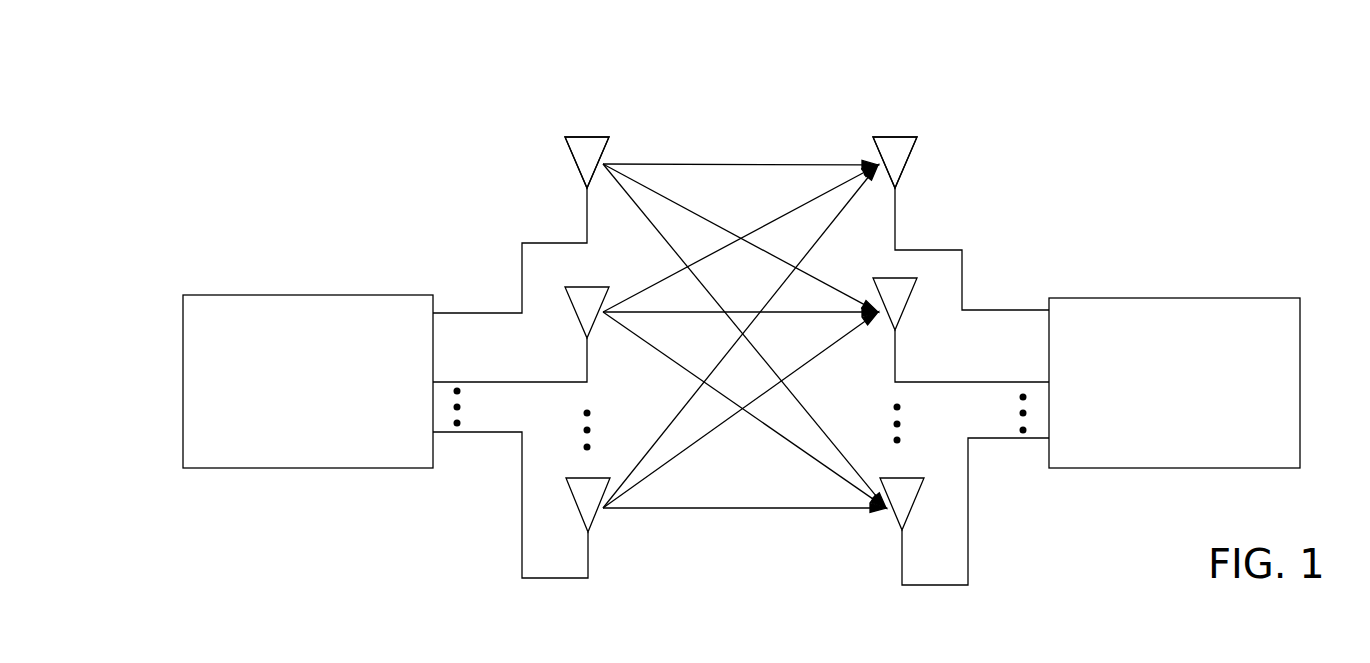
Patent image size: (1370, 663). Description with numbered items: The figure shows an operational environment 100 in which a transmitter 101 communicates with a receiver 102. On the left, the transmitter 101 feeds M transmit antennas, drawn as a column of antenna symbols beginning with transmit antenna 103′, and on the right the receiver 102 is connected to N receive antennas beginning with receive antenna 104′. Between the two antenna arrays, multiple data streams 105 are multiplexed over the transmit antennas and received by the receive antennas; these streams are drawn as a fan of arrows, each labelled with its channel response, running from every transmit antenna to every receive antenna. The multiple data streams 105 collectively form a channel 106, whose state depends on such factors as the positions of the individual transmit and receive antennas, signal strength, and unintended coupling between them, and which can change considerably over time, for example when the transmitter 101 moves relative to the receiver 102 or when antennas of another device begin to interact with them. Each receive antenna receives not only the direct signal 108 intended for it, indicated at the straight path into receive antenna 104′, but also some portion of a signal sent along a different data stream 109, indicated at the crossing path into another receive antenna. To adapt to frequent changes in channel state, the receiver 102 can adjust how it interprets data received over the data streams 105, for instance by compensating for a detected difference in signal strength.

The operational environment 100 is at (1011, 81).
The transmitter 101 is at (302, 295).
The receiver 102 is at (1180, 298).
The transmit antenna 103′ is at (565, 150).
The receive antenna 104′ is at (917, 150).
The data streams 105 is at (744, 125).
The channel 106 is at (587, 130).
The direct signal 108 is at (843, 188).
The different data stream signal 109 is at (803, 312).